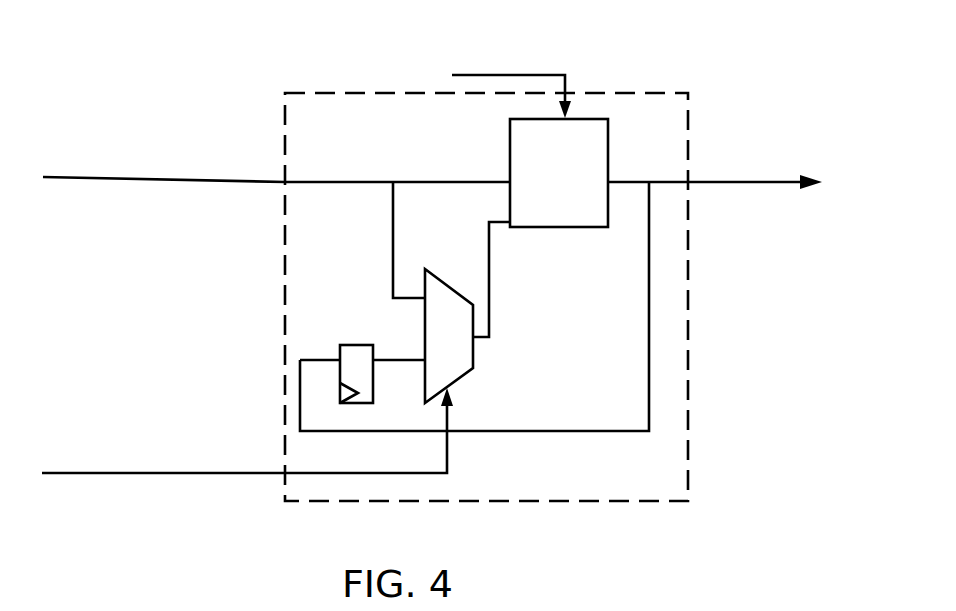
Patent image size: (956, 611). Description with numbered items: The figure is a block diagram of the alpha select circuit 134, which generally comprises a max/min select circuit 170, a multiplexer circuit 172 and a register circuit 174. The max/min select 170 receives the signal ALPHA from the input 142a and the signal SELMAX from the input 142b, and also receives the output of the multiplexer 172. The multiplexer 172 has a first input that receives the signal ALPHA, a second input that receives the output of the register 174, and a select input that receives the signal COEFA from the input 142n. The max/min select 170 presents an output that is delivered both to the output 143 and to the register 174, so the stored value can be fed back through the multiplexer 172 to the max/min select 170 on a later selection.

The alpha select circuit 134 is at (617, 70).
The input 142a is at (285, 184).
The input 142b is at (571, 82).
The input 142n is at (285, 473).
The output 143 is at (688, 183).
The max/min select circuit 170 is at (566, 228).
The multiplexer circuit 172 is at (474, 352).
The register circuit 174 is at (360, 345).